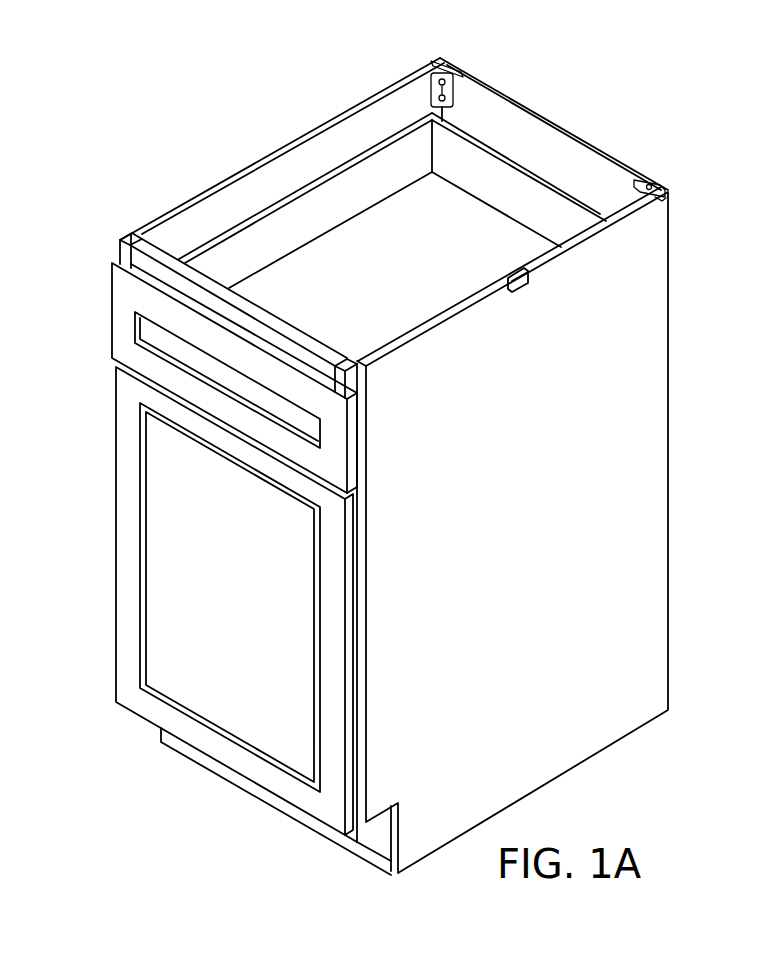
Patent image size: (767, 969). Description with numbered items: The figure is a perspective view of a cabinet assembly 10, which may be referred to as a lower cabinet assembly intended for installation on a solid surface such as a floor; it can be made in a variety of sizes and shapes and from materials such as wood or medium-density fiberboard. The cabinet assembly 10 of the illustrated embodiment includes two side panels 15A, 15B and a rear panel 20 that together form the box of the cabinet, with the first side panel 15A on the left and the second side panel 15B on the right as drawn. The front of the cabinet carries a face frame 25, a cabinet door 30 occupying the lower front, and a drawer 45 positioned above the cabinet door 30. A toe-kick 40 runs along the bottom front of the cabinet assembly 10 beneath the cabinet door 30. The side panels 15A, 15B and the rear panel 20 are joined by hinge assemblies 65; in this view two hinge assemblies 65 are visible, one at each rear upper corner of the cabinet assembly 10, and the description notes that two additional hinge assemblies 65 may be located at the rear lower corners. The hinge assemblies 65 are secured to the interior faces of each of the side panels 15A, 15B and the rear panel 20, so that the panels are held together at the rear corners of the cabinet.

The cabinet assembly 10 is at (661, 96).
The side panel 15A is at (330, 124).
The side panel 15B is at (657, 489).
The rear panel 20 is at (557, 123).
The face frame 25 is at (125, 256).
The cabinet door 30 is at (228, 704).
The toe-kick 40 is at (380, 840).
The drawer 45 is at (122, 315).
The hinge assembly 65 is at (461, 70).